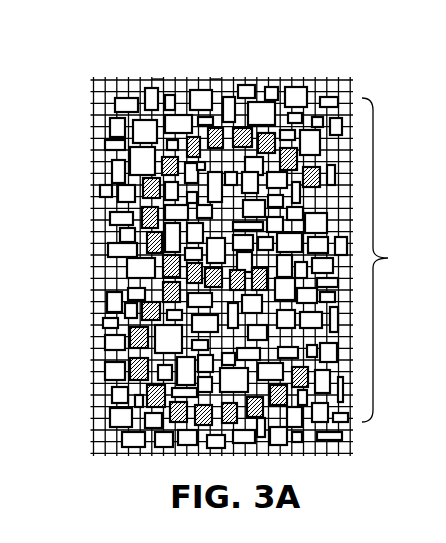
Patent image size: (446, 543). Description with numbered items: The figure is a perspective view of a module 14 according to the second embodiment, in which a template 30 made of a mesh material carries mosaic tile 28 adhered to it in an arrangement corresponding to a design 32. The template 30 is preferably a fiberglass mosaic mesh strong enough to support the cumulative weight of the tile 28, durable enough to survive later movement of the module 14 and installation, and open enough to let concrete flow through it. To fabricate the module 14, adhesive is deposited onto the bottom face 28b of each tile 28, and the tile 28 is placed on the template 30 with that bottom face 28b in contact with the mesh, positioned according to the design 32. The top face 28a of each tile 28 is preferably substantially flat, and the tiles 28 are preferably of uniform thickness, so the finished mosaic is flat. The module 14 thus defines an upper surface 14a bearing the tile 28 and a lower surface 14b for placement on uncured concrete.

The module 14 is at (101, 60).
The upper surface 14a is at (158, 72).
The lower surface 14b is at (215, 72).
The mosaic tile 28 is at (112, 104).
The top face 28a is at (115, 220).
The bottom face 28b is at (120, 212).
The template 30 is at (292, 78).
The design 32 is at (391, 260).